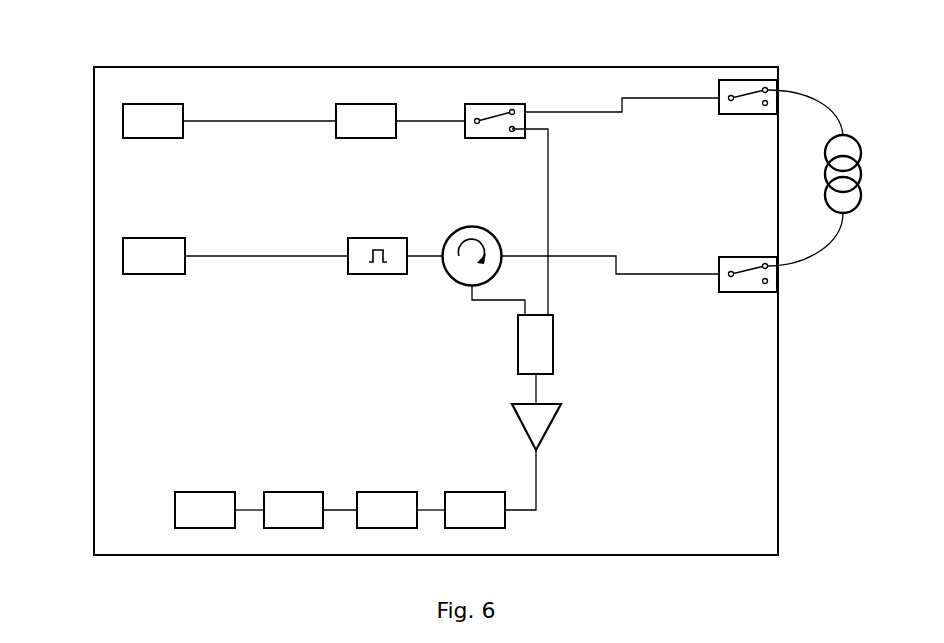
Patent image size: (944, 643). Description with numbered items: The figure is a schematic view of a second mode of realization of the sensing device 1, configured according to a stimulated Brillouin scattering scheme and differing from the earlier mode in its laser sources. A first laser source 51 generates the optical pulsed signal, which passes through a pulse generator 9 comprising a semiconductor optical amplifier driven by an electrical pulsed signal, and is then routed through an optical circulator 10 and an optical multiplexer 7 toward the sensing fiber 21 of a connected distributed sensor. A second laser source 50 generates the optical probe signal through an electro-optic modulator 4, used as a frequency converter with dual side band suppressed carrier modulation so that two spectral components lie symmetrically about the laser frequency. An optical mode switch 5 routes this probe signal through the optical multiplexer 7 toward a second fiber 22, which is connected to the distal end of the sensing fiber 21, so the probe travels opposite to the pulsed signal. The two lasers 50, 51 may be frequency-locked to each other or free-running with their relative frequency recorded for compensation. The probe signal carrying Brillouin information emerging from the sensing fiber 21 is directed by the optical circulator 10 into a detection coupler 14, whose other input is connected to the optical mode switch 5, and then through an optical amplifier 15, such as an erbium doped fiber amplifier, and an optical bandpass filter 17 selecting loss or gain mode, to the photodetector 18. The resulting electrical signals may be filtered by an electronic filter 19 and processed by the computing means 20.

The sensing device 1 is at (94, 313).
The second laser source 50 is at (153, 104).
The electro-optic modulator 4 is at (366, 104).
The optical mode switch 5 is at (496, 104).
The optical multiplexer 7 is at (749, 80).
The second fiber 22 is at (818, 100).
The sensing fiber 21 is at (862, 178).
The first laser source 51 is at (153, 238).
The pulse generator 9 is at (376, 238).
The optical circulator 10 is at (473, 227).
The detection coupler 14 is at (553, 343).
The optical amplifier 15 is at (548, 428).
The optical bandpass filter 17 is at (477, 492).
The photodetector 18 is at (389, 492).
The electronic filter 19 is at (295, 492).
The computing means 20 is at (205, 492).